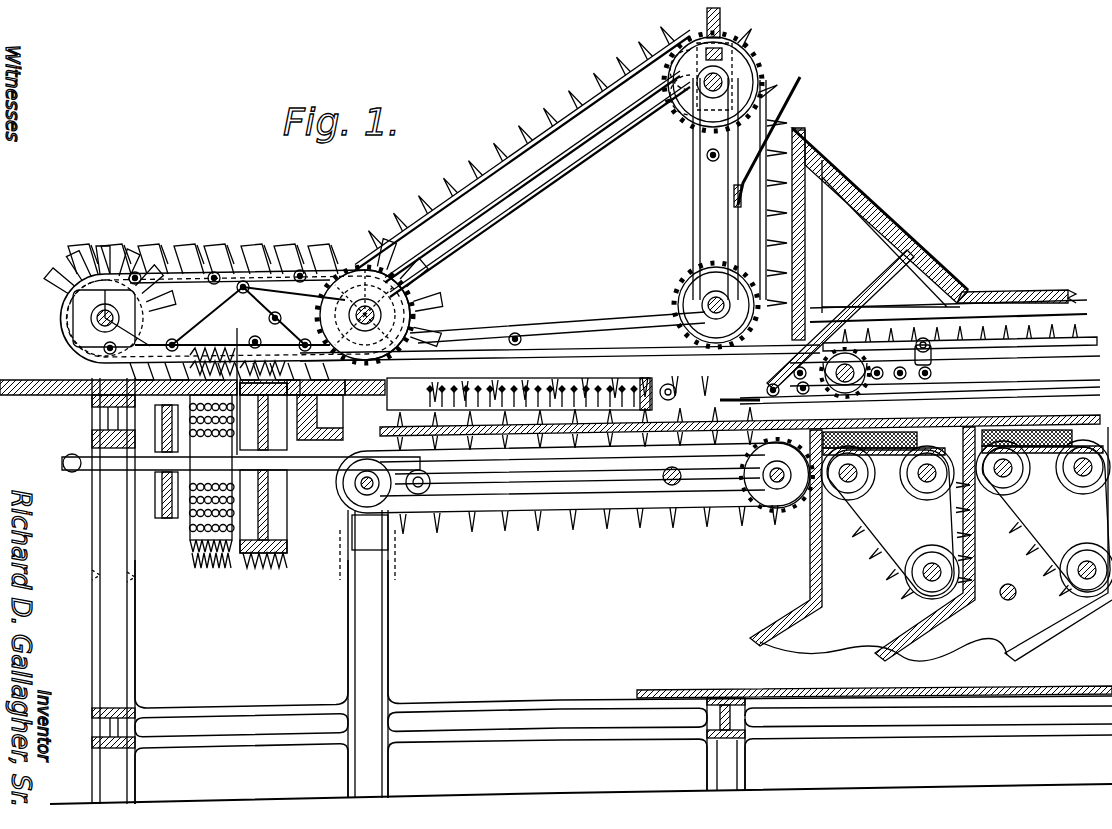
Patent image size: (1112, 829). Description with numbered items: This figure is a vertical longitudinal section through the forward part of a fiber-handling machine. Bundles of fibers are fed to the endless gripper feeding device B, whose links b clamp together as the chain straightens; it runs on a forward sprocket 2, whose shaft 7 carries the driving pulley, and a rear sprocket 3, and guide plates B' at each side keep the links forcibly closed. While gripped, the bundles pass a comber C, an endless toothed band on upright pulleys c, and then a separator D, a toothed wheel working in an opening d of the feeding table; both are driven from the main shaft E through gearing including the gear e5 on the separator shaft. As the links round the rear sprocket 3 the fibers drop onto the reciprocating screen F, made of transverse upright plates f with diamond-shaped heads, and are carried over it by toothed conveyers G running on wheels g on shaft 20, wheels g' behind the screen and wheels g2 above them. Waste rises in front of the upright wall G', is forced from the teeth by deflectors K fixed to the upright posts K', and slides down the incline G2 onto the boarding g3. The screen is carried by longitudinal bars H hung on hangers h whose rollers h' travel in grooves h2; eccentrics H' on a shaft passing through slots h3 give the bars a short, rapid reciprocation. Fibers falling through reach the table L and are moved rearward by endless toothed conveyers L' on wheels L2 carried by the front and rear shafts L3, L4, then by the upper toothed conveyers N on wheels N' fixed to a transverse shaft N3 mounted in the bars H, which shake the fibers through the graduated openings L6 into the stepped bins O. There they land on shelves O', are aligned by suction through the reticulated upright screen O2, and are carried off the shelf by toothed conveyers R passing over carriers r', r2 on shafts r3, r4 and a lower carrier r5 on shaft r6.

The endless gripper feeding device B is at (235, 287).
The guide plate B' is at (203, 296).
The links b is at (35, 268).
The forward sprocket 2 is at (130, 308).
The shaft 7 is at (140, 335).
The opening d is at (237, 383).
The upright wheels g is at (397, 301).
The shaft 20 is at (378, 315).
The upright posts K' is at (571, 165).
The wheels g2 is at (690, 95).
The wheels g' is at (715, 291).
The toothed conveyers G is at (557, 299).
The deflectors K is at (793, 137).
The upright wall G' is at (933, 218).
The incline G2 is at (848, 178).
The eccentrics H' is at (948, 303).
The toothed conveyers N is at (945, 294).
The wheels N' is at (894, 302).
The transverse shaft N3 is at (852, 352).
The rollers h' is at (954, 310).
The boarding g3 is at (1005, 340).
The bars H is at (920, 385).
The slots h3 is at (740, 407).
The reciprocating screen F is at (545, 388).
The transverse upright plates f is at (600, 385).
The hangers h is at (570, 345).
The grooves h2 is at (545, 340).
The table L is at (740, 428).
The graduated openings L6 is at (920, 430).
The endless toothed conveyers L' is at (572, 515).
The wheels L2 is at (770, 545).
The front transverse shaft L3 is at (360, 500).
The rear sprocket 3 is at (334, 561).
The main shaft E is at (668, 486).
The rear transverse shaft L4 is at (760, 490).
The gear e5 is at (163, 490).
The comber C is at (200, 538).
The upright pulleys c is at (190, 515).
The separator D is at (275, 532).
The toothed conveyers R is at (931, 544).
The bins O is at (968, 536).
The reticulated upright screen O2 is at (1027, 495).
The shelves O' is at (998, 492).
The transverse shaft r4 is at (1072, 522).
The transverse shaft r3 is at (848, 480).
The carrier r' is at (851, 530).
The carrier r2 is at (1097, 510).
The lower carrier r5 is at (1098, 645).
The transverse shaft r6 is at (1075, 655).